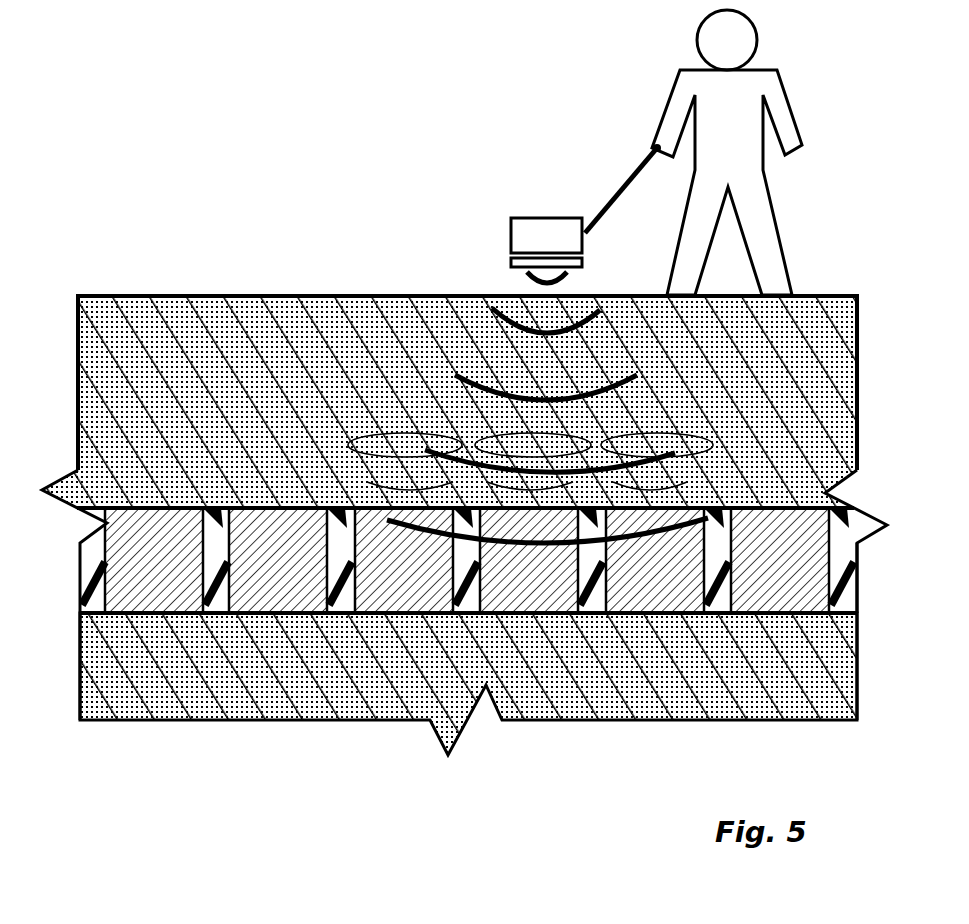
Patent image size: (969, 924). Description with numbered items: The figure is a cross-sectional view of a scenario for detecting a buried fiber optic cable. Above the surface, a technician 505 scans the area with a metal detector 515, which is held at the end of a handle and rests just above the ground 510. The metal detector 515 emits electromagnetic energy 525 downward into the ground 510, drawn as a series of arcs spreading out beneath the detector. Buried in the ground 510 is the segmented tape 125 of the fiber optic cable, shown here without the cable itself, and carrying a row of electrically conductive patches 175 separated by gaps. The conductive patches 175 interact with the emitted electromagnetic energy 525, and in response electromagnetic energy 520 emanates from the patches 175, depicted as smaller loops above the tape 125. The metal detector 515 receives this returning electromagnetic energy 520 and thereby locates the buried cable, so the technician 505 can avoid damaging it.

The technicians 505 is at (750, 114).
The metal detector 515 is at (566, 249).
The electromagnetic energy 525 is at (578, 351).
The electromagnetic energy 520 is at (366, 478).
The electrically conductive patches 175 is at (135, 587).
The ground 510 is at (736, 681).
The segmented tape 125 is at (858, 592).